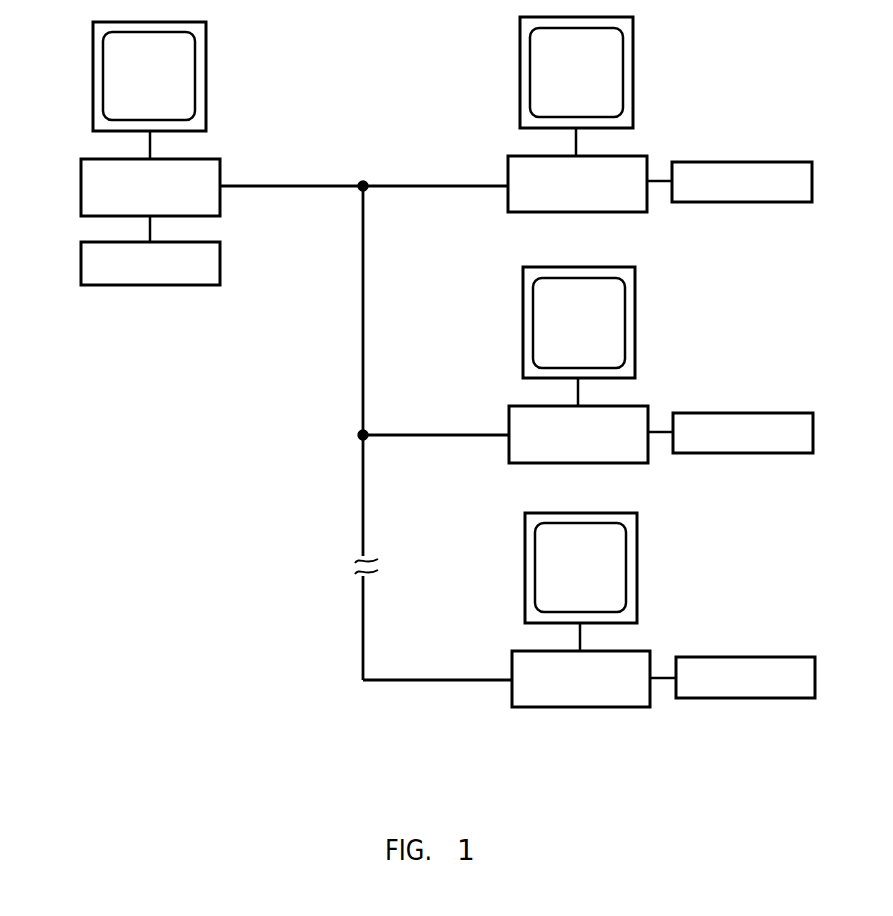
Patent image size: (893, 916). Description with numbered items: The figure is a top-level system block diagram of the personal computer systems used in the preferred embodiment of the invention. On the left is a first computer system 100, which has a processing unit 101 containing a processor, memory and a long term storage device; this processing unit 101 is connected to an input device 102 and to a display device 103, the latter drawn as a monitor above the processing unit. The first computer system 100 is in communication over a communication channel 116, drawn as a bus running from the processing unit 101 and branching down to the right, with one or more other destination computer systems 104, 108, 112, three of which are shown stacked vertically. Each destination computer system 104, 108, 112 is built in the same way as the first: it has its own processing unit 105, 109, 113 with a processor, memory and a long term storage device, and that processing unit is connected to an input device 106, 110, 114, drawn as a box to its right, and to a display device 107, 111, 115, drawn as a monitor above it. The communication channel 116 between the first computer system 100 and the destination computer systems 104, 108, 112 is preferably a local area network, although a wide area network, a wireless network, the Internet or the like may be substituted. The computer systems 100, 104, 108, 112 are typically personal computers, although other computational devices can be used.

The first computer system 100 is at (102, 150).
The processing unit 101 is at (81, 188).
The input device 102 is at (81, 265).
The server display monitor 103 is at (93, 77).
The destination computer system 104 is at (622, 137).
The processing unit 105 is at (650, 159).
The input device 106 is at (768, 162).
The display device 107 is at (635, 43).
The destination computer system 108 is at (623, 387).
The processing unit 109 is at (650, 410).
The input device 110 is at (770, 412).
The display device 111 is at (635, 293).
The destination computer system 112 is at (625, 632).
The processing unit 113 is at (652, 654).
The input device 114 is at (772, 657).
The display device 115 is at (637, 539).
The communication channel 116 is at (348, 182).